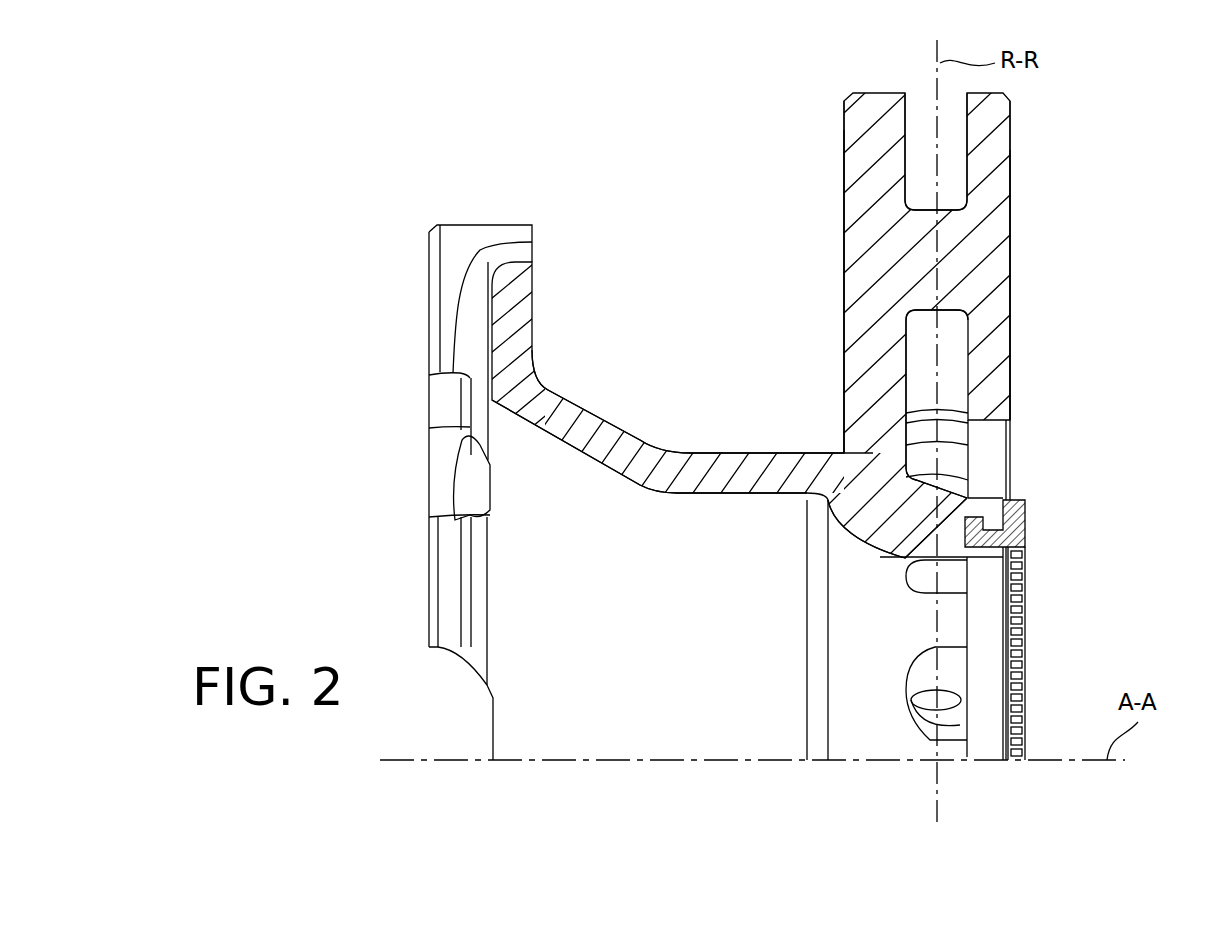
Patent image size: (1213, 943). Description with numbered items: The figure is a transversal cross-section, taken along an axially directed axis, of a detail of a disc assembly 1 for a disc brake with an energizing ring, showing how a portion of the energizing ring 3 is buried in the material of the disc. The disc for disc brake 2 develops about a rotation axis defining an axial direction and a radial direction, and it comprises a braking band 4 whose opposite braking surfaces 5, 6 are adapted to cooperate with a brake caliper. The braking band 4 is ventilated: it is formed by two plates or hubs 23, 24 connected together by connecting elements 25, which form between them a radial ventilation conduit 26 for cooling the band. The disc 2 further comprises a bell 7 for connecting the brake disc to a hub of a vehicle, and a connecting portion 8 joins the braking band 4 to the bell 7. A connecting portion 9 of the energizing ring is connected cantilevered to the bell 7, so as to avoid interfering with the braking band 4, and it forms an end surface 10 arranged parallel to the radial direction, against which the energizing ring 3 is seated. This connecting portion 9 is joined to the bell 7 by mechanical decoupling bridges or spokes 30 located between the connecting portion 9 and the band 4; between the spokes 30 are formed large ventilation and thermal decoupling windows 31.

The disc assembly 1 is at (1078, 228).
The disc for disc brake 2 is at (1000, 318).
The energizing ring 3 is at (1025, 527).
The braking band 4 is at (990, 140).
The braking surface 5 is at (1010, 200).
The braking surface 6 is at (845, 210).
The bell 7 is at (595, 440).
The connecting portion 8 is at (845, 452).
The connecting portion of the energizing ring 9 is at (897, 520).
The end surface 10 is at (993, 503).
The plate 23 is at (1005, 102).
The plate 24 is at (860, 125).
The connecting element 25 is at (963, 257).
The radial ventilation conduit 26 is at (948, 358).
The spoke 30 is at (960, 620).
The ventilation and thermal decoupling window 31 is at (952, 668).